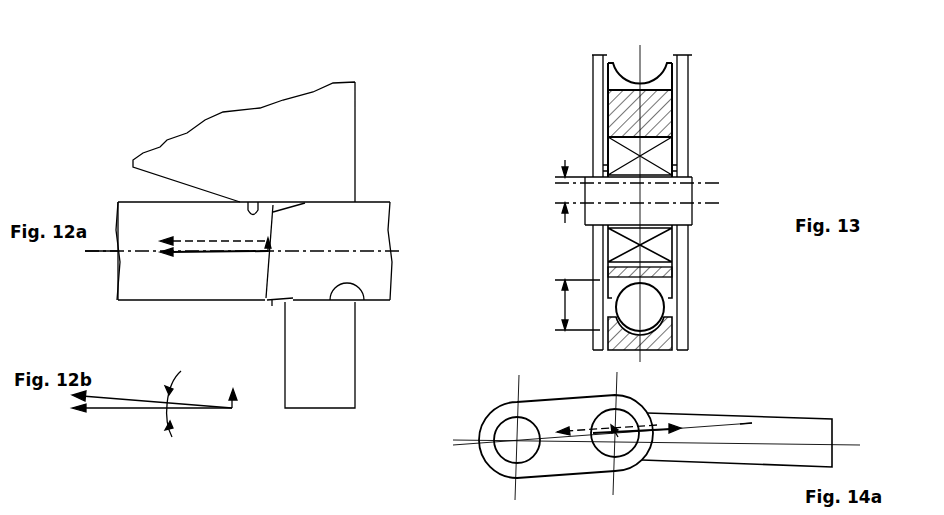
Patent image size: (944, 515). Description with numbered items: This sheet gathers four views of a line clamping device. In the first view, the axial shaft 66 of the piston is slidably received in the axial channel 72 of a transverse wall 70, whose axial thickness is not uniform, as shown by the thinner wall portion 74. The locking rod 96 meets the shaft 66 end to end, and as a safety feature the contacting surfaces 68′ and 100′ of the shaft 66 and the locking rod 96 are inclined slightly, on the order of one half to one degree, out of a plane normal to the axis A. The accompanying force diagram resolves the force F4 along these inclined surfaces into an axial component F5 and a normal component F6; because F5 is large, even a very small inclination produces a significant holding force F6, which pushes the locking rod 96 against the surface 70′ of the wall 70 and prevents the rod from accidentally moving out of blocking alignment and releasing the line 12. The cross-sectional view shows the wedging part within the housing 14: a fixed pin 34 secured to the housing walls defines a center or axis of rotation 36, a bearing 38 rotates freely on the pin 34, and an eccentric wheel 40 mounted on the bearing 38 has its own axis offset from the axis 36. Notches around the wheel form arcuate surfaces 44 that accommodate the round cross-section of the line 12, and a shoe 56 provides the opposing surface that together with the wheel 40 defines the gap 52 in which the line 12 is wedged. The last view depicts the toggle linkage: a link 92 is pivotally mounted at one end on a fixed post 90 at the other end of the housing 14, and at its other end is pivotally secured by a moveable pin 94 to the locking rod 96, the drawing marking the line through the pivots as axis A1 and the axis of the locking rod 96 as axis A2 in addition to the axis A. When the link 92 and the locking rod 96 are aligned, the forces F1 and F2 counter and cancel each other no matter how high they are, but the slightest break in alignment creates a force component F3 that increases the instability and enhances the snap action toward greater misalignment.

In FIG. 12A, the transverse wall 70 is at (270, 128).
In FIG. 12A, the surface of the wall 70′ is at (257, 212).
In FIG. 12A, the axial shaft 66 is at (363, 217).
In FIG. 12A, the locking rod 96 is at (137, 290).
In FIG. 14A, the locking rod 96 is at (712, 452).
In FIG. 12A, the inclined surface of the shaft 68′ is at (263, 270).
In FIG. 12A, the axial channel 72 is at (370, 300).
In FIG. 12A, the inclined surface of the locking rod 100′ is at (272, 300).
In FIG. 12A, the thinner wall portion 74 is at (326, 378).
In FIG. 12A, the force F4 is at (177, 240).
In FIG. 12B, the force F4 is at (103, 398).
In FIG. 12A, the axial force component F5 is at (178, 257).
In FIG. 12B, the axial force component F5 is at (90, 412).
In FIG. 12A, the normal force component F6 is at (272, 243).
In FIG. 12B, the normal force component F6 is at (237, 410).
In FIG. 12A, the axis A is at (110, 253).
In FIG. 14A, the axis A is at (740, 445).
In FIG. 13, the housing 14 is at (686, 95).
In FIG. 13, the arcuate surface 44 is at (656, 74).
In FIG. 13, the eccentric wheel 40 is at (620, 105).
In FIG. 13, the bearing 38 is at (665, 157).
In FIG. 13, the axis of rotation 36 is at (702, 206).
In FIG. 13, the fixed pin 34 is at (587, 218).
In FIG. 13, the line 12 is at (650, 312).
In FIG. 13, the shoe 56 is at (655, 343).
In FIG. 13, the gap 52 is at (557, 300).
In FIG. 14A, the fixed post 90 is at (507, 460).
In FIG. 14A, the link 92 is at (568, 468).
In FIG. 14A, the moveable pin 94 is at (634, 455).
In FIG. 14A, the axis A1 is at (467, 448).
In FIG. 14A, the axis A2 is at (748, 440).
In FIG. 14A, the force F1 is at (574, 426).
In FIG. 14A, the force F2 is at (653, 418).
In FIG. 14A, the force component F3 is at (622, 425).